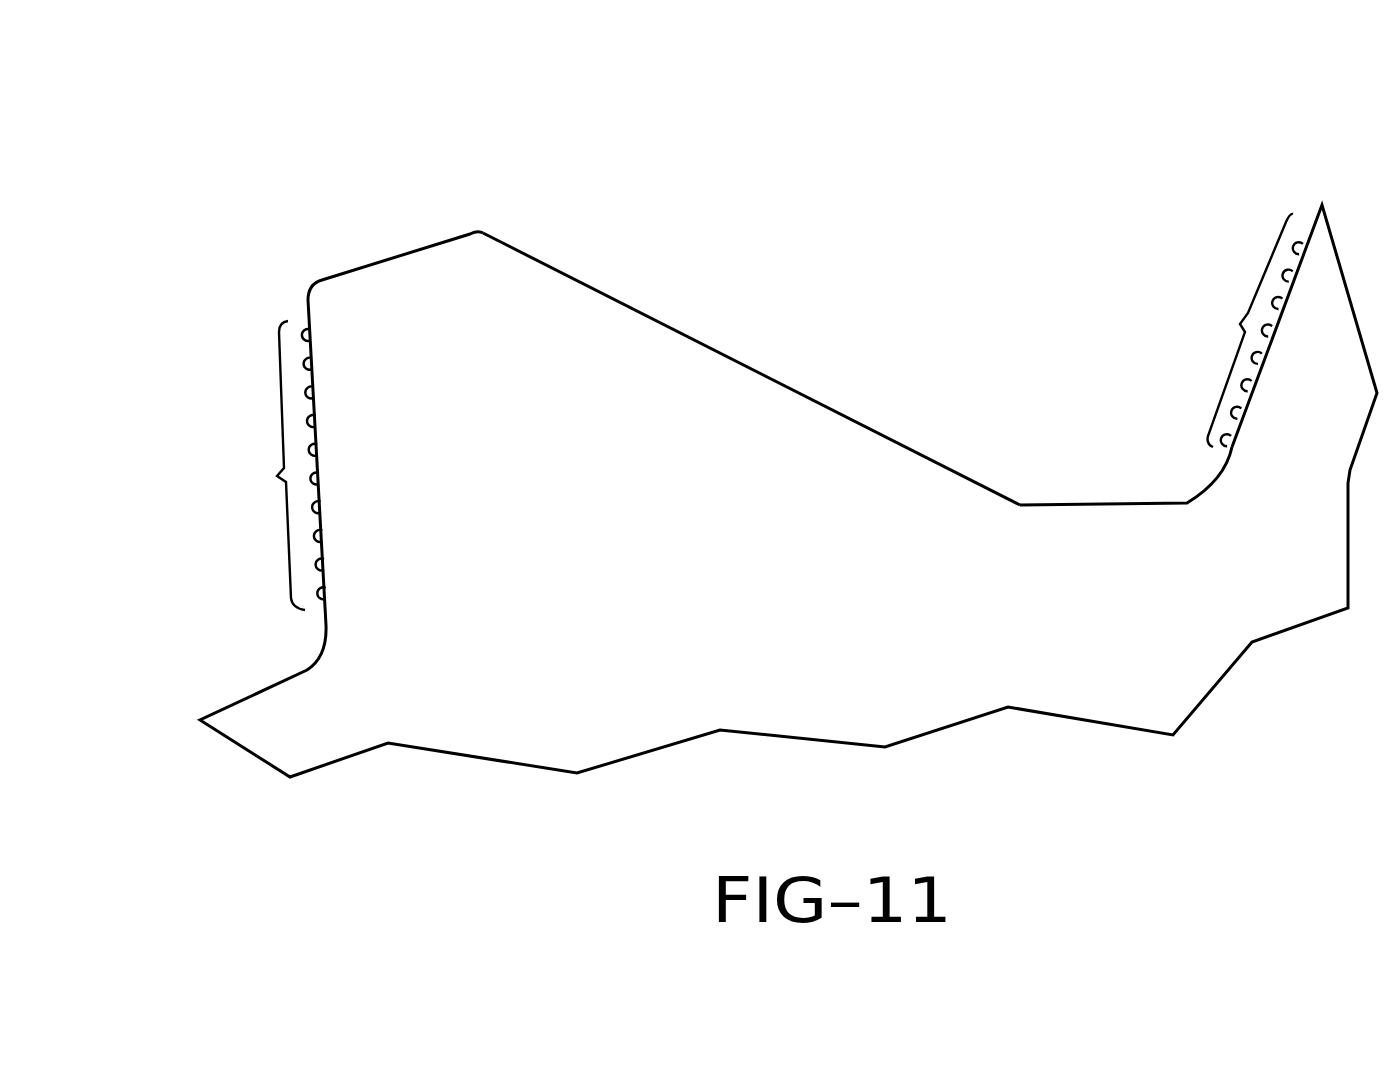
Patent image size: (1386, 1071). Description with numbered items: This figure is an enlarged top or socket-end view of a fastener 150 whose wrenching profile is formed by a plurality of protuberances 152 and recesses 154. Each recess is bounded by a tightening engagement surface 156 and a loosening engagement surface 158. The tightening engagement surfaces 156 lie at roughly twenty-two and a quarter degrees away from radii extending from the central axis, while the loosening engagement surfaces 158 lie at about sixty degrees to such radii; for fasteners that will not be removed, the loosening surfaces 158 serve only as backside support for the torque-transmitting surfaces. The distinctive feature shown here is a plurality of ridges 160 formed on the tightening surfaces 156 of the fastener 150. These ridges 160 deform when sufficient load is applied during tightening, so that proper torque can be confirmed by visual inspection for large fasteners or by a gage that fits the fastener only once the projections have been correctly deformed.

The fastener 150 is at (262, 160).
The protuberances 152 is at (438, 242).
The recesses 154 is at (1123, 444).
The tightening engagement surfaces 156 is at (317, 435).
The loosening engagement surfaces 158 is at (757, 370).
The ridges 160 is at (277, 476).